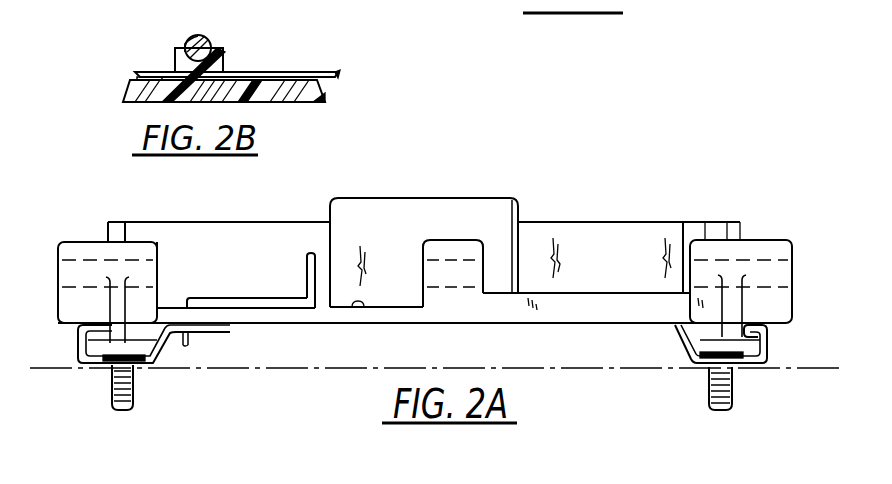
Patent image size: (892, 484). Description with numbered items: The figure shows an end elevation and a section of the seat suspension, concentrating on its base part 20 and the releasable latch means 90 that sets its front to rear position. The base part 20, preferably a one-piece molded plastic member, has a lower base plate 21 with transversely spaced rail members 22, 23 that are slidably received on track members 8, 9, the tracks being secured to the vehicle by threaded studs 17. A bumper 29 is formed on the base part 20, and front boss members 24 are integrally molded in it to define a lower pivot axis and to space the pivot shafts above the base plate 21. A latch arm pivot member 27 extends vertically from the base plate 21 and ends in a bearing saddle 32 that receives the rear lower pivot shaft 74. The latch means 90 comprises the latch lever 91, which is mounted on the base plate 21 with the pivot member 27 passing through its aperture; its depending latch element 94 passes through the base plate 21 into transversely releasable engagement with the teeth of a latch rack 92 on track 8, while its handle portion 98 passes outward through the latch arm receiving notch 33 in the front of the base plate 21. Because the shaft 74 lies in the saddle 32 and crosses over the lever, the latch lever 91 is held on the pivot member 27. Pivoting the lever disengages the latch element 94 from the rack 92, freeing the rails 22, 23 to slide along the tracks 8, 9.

In FIG. 2A, the track member 8 is at (78, 347).
In FIG. 2A, the track member 9 is at (770, 343).
In FIG. 2A, the threaded stud 17 is at (137, 405).
In FIG. 2A, the base part 20 is at (575, 222).
In FIG. 2B, the lower base plate 21 is at (305, 99).
In FIG. 2A, the rail member 22 is at (97, 361).
In FIG. 2A, the rail member 23 is at (750, 358).
In FIG. 2A, the front boss member 24 is at (84, 243).
In FIG. 2B, the latch arm pivot member 27 is at (223, 62).
In FIG. 2A, the bumper 29 is at (432, 175).
In FIG. 2B, the bearing saddle 32 is at (208, 40).
In FIG. 2A, the latch arm receiving notch 33 is at (365, 308).
In FIG. 2B, the rear lower pivot shaft 74 is at (187, 40).
In FIG. 2A, the releasable latch means 90 is at (305, 314).
In FIG. 2B, the latch lever 91 is at (326, 42).
In FIG. 2A, the latch lever 91 is at (257, 270).
In FIG. 2A, the latch rack 92 is at (227, 333).
In FIG. 2A, the latch element 94 is at (190, 345).
In FIG. 2A, the handle portion 98 is at (307, 260).